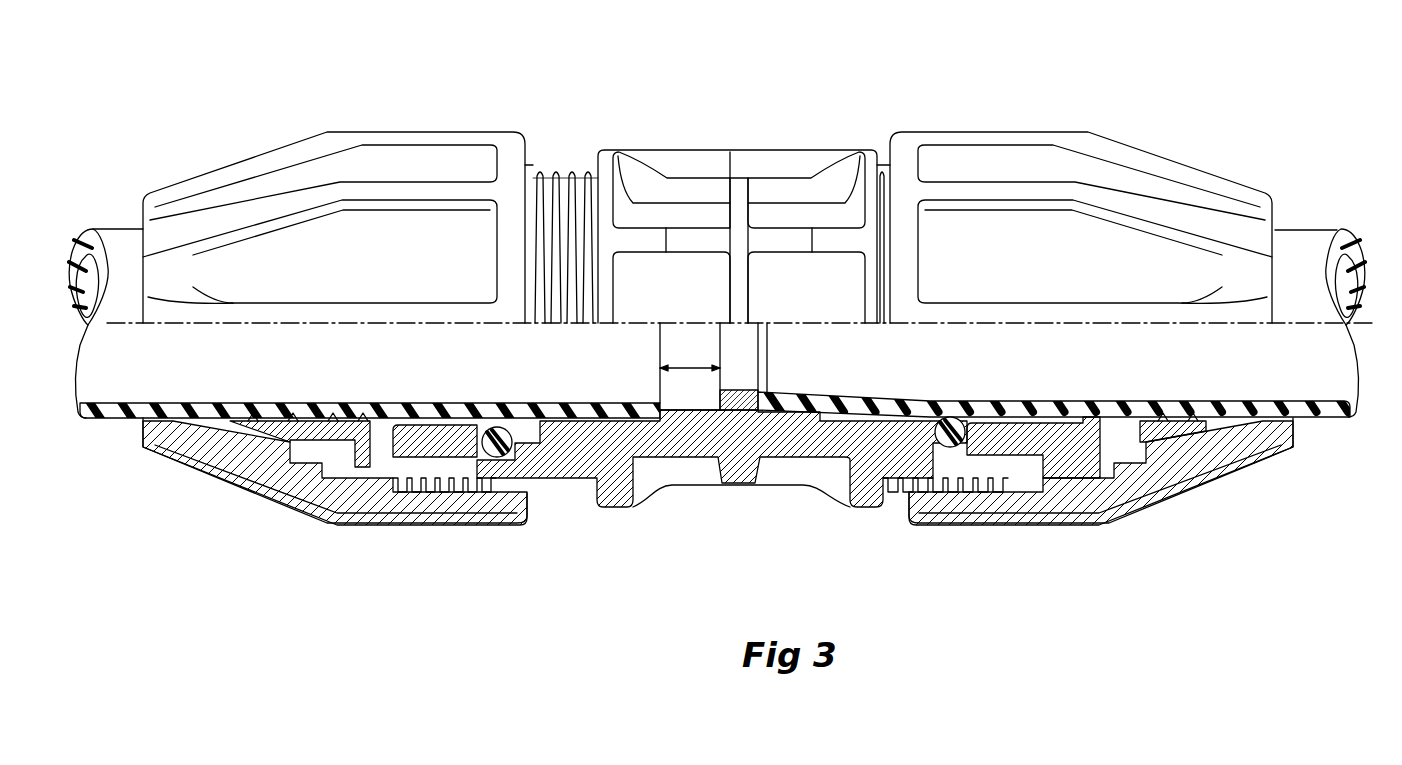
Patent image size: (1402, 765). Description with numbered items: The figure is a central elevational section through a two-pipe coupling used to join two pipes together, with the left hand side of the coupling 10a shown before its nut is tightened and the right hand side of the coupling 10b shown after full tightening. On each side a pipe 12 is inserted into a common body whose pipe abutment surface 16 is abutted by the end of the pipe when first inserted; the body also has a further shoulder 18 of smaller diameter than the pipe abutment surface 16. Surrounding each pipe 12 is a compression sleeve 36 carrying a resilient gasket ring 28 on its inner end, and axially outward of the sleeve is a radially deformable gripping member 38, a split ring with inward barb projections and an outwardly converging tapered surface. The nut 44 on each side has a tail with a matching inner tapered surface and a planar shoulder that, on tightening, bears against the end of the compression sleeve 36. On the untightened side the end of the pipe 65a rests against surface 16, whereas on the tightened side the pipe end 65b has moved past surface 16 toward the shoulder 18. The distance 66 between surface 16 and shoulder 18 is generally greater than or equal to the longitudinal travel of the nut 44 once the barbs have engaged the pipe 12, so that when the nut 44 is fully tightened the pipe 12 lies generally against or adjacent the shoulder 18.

The left hand side of the coupling 10a is at (478, 103).
The right hand side of the coupling 10b is at (996, 103).
The pipe 12 is at (1292, 247).
The pipe abutment surface 16 is at (670, 413).
The shoulder 18 is at (707, 412).
The resilient gasket ring 28 is at (494, 452).
The compression sleeve 36 is at (400, 447).
The gripping member 38 is at (310, 433).
The nut 44 is at (287, 183).
The end of the pipe 65a is at (713, 395).
The end of the other pipe 65b is at (759, 392).
The distance 66 is at (686, 368).